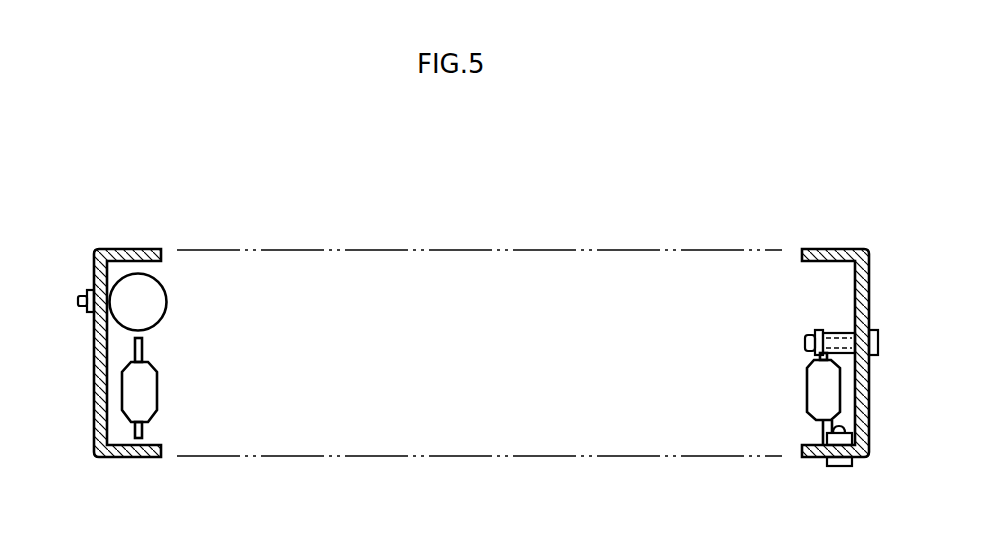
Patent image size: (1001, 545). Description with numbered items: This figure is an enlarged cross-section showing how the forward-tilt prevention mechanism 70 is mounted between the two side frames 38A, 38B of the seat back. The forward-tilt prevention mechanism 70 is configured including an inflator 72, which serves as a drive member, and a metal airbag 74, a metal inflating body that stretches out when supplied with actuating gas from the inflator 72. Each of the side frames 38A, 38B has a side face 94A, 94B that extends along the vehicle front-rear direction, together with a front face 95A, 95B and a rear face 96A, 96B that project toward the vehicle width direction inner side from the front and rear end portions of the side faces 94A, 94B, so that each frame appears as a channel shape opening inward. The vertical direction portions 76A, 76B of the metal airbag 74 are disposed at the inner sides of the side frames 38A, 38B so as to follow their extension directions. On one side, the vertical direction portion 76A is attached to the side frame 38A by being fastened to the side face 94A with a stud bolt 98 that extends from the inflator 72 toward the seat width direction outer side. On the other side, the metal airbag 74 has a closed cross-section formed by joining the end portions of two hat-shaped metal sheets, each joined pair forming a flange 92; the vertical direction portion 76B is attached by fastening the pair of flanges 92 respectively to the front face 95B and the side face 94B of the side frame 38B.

The side frame 38A is at (86, 243).
The side frame 38B is at (885, 276).
The forward-tilt prevention mechanism 70 is at (182, 416).
The inflator 72 is at (157, 297).
The metal airbag 74 is at (143, 385).
The vertical direction portion 76A is at (177, 347).
The vertical direction portion 76B is at (780, 356).
The flange 92 is at (823, 330).
The side face 94A is at (95, 376).
The side face 94B is at (870, 395).
The front face 95A is at (133, 458).
The front face 95B is at (862, 457).
The rear face 96A is at (127, 249).
The rear face 96B is at (823, 249).
The stud bolt 98 is at (78, 301).